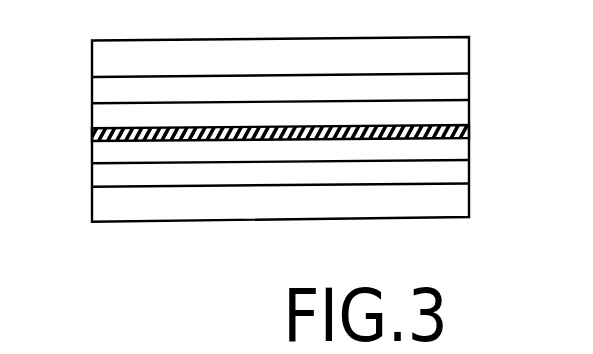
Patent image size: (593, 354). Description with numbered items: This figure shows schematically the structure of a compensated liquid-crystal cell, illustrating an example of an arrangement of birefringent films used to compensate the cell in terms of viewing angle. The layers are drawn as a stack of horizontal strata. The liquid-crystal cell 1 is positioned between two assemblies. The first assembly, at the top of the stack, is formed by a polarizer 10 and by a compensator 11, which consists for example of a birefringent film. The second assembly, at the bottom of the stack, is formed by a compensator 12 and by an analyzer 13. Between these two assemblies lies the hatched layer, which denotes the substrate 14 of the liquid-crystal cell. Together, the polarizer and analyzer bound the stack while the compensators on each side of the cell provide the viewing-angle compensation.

The liquid-crystal cell 1 is at (247, 129).
The polarizer 10 is at (469, 57).
The compensator 11 is at (469, 88).
The substrate of the liquid-crystal cell 14 is at (469, 110).
The compensator 12 is at (469, 175).
The analyzer 13 is at (469, 203).